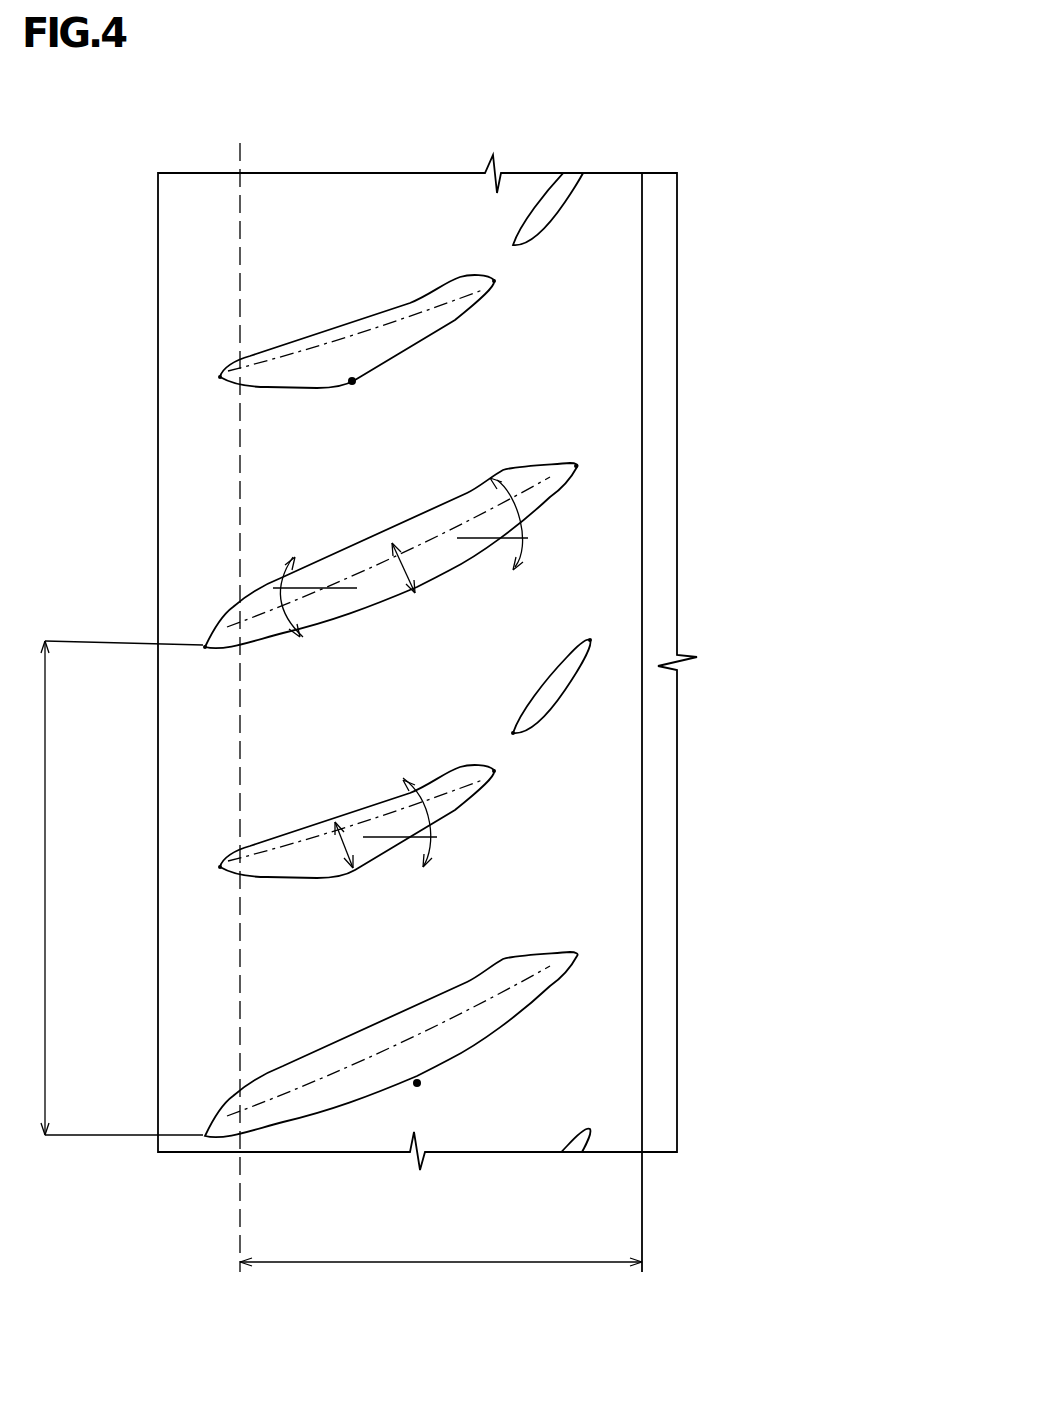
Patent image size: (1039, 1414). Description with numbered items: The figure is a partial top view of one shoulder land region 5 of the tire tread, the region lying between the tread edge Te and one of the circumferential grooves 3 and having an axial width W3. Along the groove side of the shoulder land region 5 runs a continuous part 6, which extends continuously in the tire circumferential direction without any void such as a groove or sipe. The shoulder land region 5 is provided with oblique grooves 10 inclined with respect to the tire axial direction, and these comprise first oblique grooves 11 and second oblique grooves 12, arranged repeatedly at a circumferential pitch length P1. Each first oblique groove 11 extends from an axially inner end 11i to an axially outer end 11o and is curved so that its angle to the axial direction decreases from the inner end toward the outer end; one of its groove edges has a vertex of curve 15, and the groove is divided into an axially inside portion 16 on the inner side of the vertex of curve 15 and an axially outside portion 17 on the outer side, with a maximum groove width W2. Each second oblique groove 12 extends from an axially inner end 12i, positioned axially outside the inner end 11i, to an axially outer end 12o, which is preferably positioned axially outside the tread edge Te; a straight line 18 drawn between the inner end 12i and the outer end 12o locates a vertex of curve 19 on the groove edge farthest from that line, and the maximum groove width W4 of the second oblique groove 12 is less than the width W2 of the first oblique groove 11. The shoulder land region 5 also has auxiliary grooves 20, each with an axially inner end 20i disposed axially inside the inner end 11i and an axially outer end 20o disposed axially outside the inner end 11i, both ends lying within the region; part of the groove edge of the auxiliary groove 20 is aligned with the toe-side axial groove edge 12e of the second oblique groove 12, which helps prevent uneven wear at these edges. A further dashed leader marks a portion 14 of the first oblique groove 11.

The circumferential groove 3 is at (658, 195).
The shoulder land region 5 is at (325, 233).
The continuous part 6 is at (620, 265).
The oblique groove 10 is at (748, 948).
The first oblique groove 11 is at (78, 421).
The axially inner end of first oblique groove 11i is at (577, 467).
The axially outer end of first oblique groove 11o is at (205, 647).
The second oblique groove 12 is at (397, 337).
The axially inner end of second oblique groove 12i is at (495, 283).
The axially outer end of second oblique groove 12o is at (220, 377).
The axial groove edge of second oblique groove 12e is at (477, 797).
The groove portion of first lateral groove 14 is at (293, 1090).
The vertex of curve 15 is at (417, 1083).
The axially inside portion 16 is at (478, 507).
The axially outside portion 17 is at (357, 570).
The straight line 18 is at (423, 305).
The vertex of curve 19 is at (352, 381).
The auxiliary groove 20 is at (547, 207).
The axially inner end of auxiliary groove 20i is at (590, 640).
The axially outer end of auxiliary groove 20o is at (513, 733).
The tread edge Te is at (240, 692).
The pitch length of oblique grooves P1 is at (106, 888).
The maximum groove width of first oblique groove W2 is at (413, 573).
The axial width of shoulder land region W3 is at (441, 1277).
The maximum groove width of second oblique groove W4 is at (345, 850).